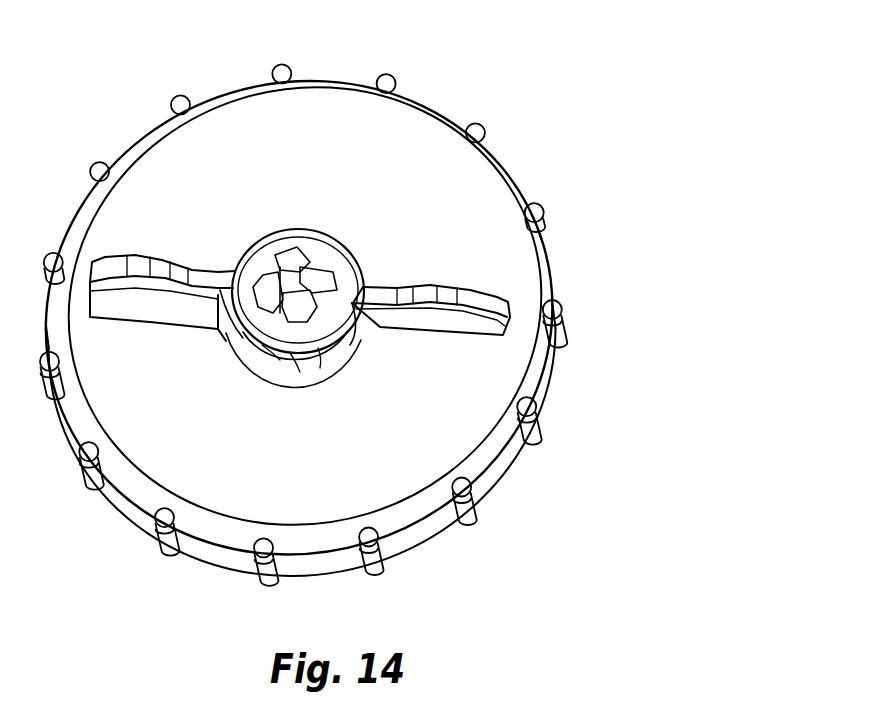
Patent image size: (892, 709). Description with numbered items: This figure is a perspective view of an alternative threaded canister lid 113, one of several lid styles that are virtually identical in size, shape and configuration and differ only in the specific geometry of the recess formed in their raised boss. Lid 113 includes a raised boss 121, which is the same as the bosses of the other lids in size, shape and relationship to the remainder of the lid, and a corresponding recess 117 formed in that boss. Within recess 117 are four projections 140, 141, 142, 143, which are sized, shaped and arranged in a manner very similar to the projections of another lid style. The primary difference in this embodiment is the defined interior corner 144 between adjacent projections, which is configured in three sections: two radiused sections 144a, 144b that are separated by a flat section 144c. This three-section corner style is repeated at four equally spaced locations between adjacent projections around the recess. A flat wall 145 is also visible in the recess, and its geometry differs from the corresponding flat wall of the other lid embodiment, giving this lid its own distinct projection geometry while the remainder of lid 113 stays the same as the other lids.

The lid 113 is at (584, 176).
The projection 143 is at (270, 266).
The projection 140 is at (311, 255).
The raised boss 121 is at (358, 262).
The flat wall 145 is at (318, 252).
The recess 117 is at (331, 268).
The interior corner 144 is at (362, 280).
The projection 142 is at (243, 338).
The projection 141 is at (340, 347).
The radiused section 144a is at (323, 350).
The radiused section 144b is at (277, 353).
The flat section 144c is at (297, 357).